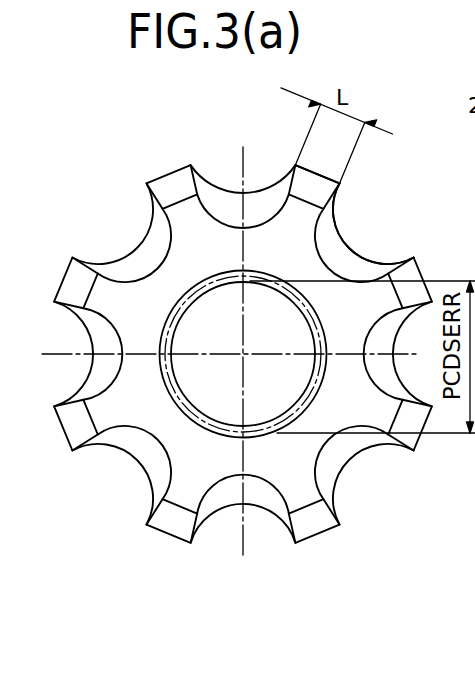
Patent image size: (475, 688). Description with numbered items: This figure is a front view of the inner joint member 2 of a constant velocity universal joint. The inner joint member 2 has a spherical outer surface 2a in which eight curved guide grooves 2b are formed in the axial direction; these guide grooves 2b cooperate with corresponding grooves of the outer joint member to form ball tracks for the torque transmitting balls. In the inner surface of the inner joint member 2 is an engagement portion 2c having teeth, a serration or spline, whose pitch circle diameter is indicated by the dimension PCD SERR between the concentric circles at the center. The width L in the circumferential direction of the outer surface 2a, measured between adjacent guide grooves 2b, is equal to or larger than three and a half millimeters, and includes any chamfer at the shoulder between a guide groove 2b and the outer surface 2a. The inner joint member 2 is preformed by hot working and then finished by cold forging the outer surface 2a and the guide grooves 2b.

The inner joint member 2 is at (130, 150).
The spherical outer surface 2a is at (320, 183).
The curved guide grooves 2b is at (340, 233).
The engagement portion 2c is at (277, 294).